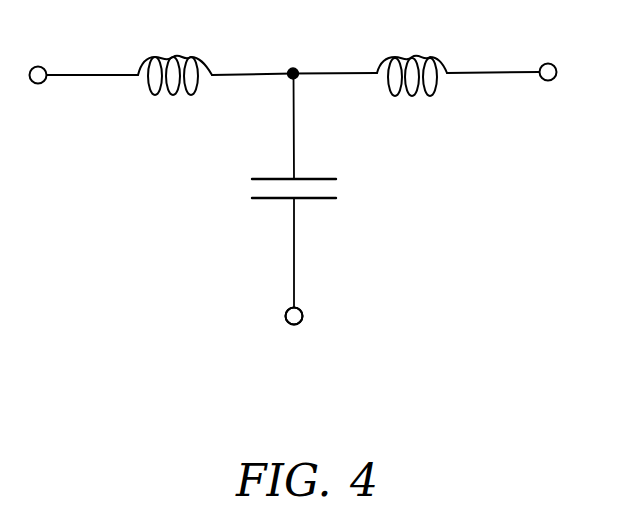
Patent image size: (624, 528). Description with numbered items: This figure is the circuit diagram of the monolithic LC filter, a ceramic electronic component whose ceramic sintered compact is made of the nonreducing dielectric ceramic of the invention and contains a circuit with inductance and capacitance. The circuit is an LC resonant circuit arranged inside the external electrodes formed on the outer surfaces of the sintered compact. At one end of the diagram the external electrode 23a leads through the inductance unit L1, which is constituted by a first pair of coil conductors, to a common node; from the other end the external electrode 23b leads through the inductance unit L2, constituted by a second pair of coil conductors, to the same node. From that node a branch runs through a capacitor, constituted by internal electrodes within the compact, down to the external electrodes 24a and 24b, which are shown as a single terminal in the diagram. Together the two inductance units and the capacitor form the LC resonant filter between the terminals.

The external electrode 23a is at (37, 90).
The external electrode 23b is at (544, 87).
The external electrode 24a is at (286, 341).
The external electrode 24b is at (325, 341).
The inductance unit L1 is at (175, 63).
The inductance unit L2 is at (412, 62).